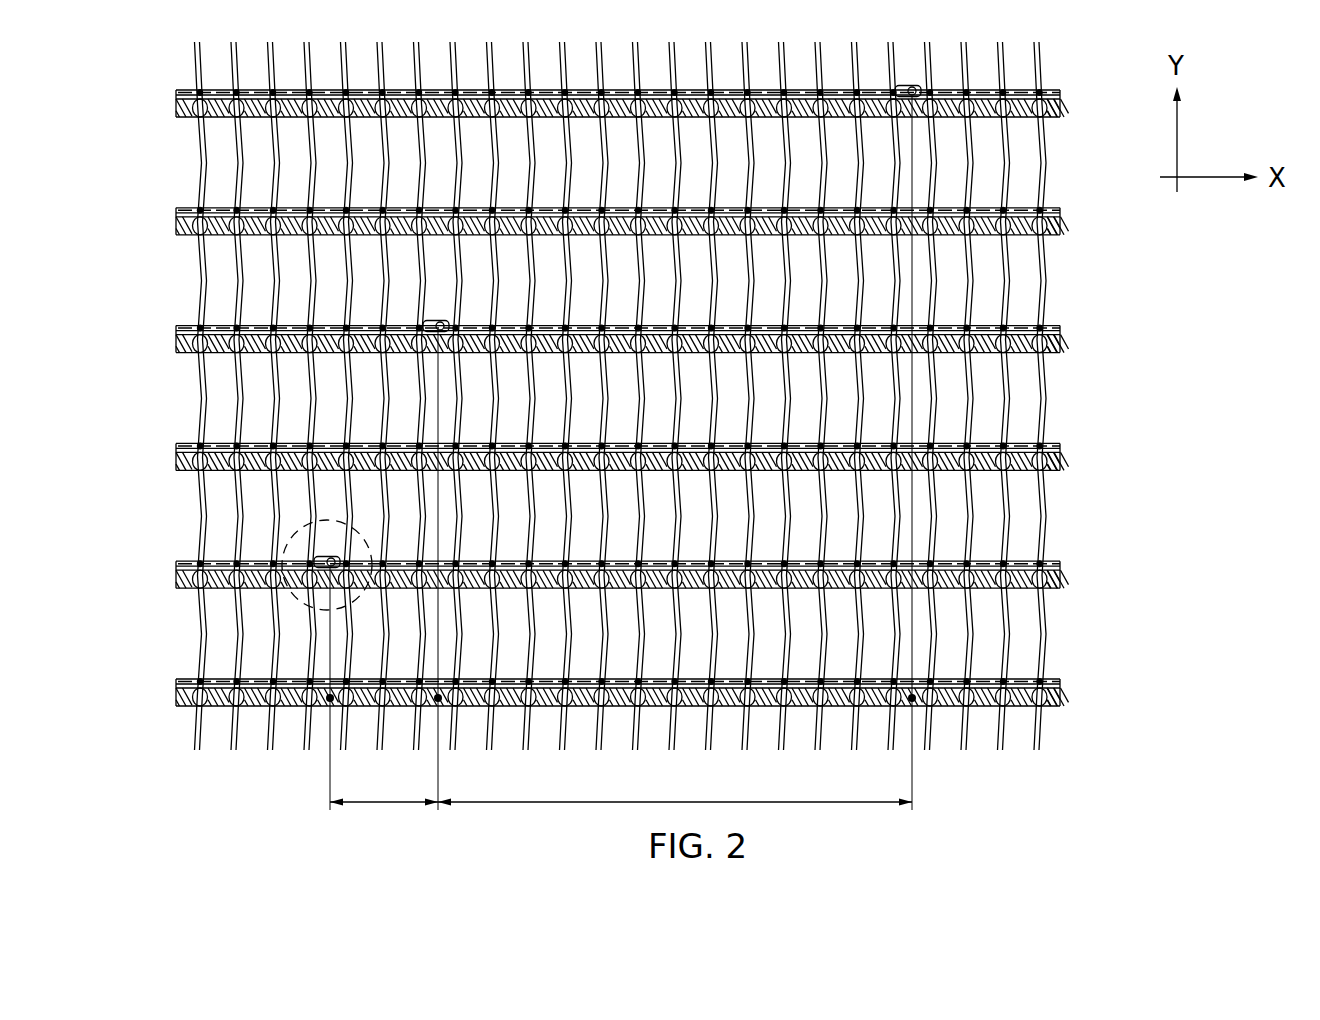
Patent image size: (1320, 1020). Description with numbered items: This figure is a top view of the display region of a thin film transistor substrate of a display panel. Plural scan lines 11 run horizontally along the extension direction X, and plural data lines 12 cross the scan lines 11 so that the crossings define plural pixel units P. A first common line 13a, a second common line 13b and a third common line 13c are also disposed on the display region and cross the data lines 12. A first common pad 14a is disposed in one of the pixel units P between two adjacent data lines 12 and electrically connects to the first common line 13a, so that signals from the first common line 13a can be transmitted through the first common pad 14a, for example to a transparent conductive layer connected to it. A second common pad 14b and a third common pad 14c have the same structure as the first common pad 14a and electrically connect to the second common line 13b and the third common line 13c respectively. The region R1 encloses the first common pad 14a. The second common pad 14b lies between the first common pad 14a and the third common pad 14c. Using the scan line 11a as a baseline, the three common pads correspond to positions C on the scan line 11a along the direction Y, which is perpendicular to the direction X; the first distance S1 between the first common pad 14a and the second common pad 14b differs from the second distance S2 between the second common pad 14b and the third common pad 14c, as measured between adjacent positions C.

The scan lines 11 is at (1050, 228).
The scan line 11a is at (1062, 693).
The data lines 12 is at (1042, 62).
The first common line 13a is at (1062, 563).
The second common line 13b is at (1062, 327).
The third common line 13c is at (1062, 92).
The first common pad 14a is at (314, 563).
The second common pad 14b is at (424, 326).
The third common pad 14c is at (909, 85).
The pixel units P is at (1030, 155).
The region R1 is at (283, 547).
The first distance S1 is at (384, 789).
The second distance S2 is at (675, 789).
The positions C is at (613, 675).